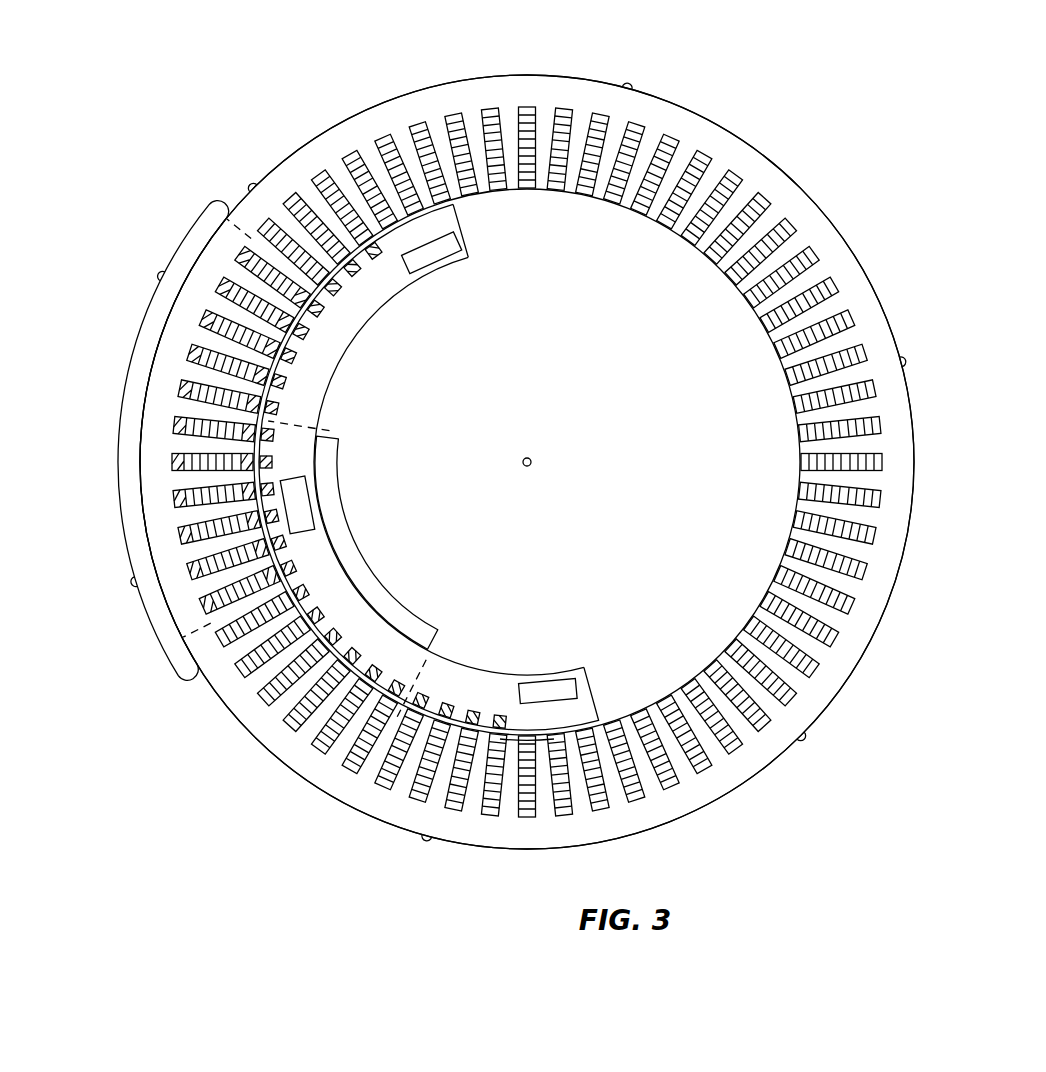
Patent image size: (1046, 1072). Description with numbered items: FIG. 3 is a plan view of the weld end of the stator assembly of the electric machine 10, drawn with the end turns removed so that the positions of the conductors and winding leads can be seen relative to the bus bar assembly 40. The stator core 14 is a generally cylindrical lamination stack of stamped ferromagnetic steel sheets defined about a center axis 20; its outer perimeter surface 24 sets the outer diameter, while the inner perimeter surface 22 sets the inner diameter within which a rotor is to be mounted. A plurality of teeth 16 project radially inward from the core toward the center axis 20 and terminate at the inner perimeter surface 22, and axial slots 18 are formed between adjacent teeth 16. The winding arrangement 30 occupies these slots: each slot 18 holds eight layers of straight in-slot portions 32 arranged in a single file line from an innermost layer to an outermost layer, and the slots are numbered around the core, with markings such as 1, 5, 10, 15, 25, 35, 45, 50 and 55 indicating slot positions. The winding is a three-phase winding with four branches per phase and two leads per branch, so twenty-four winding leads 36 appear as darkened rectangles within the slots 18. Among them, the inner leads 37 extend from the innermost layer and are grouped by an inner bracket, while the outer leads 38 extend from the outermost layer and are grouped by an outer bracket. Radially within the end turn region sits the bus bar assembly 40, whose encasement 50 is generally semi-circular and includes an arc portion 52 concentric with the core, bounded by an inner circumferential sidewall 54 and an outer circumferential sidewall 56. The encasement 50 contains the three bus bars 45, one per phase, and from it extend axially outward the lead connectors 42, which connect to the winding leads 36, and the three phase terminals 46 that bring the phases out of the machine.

The stator core 14 is at (768, 180).
The teeth 16 is at (768, 323).
The axial slots 18 is at (862, 353).
The center axis 20 is at (531, 458).
The inner perimeter surface 22 is at (800, 455).
The outer perimeter surface 24 is at (913, 528).
The winding arrangement 30 is at (634, 131).
The in-slot portions 32 is at (452, 113).
The winding leads 36 is at (239, 444).
The inner leads 37 is at (342, 520).
The outer leads 38 is at (212, 198).
The bus bar assembly 40 is at (368, 298).
The lead connectors 42 is at (272, 408).
The phase terminals 46 is at (432, 255).
The arc portion 52 is at (485, 684).
The inner circumferential sidewall 54 is at (513, 678).
The outer circumferential sidewall 56 is at (527, 735).
The slot 1 is at (229, 609).
The slot 5 is at (196, 476).
The electric machine 10 is at (233, 304).
The slot 15 is at (348, 181).
The slot 25 is at (684, 168).
The slot 35 is at (858, 447).
The bus bars 45 is at (706, 743).
The encasement 50 is at (543, 793).
The slot 55 is at (369, 756).